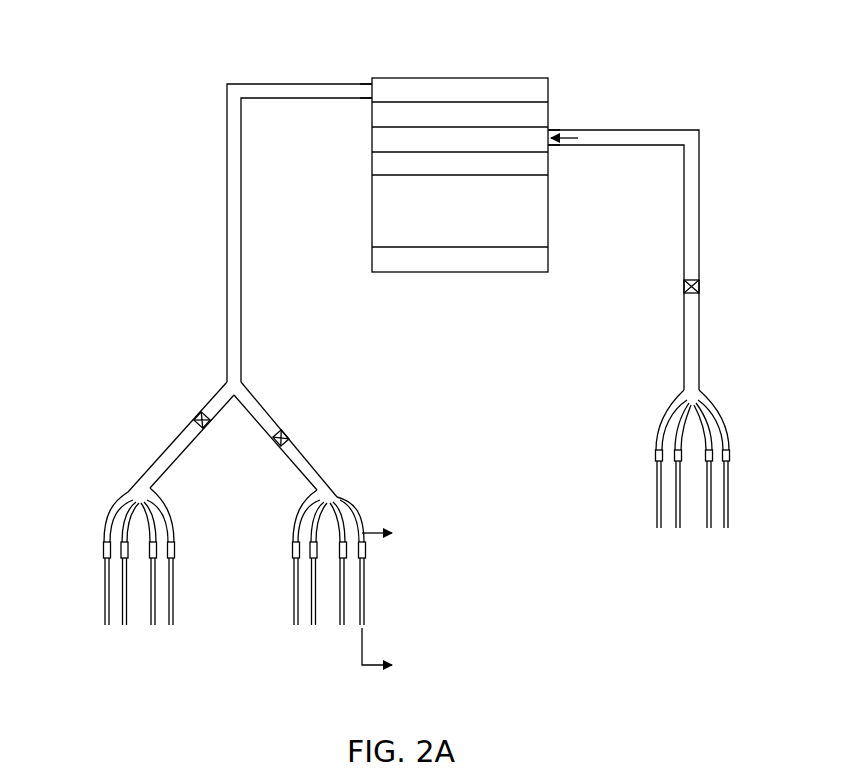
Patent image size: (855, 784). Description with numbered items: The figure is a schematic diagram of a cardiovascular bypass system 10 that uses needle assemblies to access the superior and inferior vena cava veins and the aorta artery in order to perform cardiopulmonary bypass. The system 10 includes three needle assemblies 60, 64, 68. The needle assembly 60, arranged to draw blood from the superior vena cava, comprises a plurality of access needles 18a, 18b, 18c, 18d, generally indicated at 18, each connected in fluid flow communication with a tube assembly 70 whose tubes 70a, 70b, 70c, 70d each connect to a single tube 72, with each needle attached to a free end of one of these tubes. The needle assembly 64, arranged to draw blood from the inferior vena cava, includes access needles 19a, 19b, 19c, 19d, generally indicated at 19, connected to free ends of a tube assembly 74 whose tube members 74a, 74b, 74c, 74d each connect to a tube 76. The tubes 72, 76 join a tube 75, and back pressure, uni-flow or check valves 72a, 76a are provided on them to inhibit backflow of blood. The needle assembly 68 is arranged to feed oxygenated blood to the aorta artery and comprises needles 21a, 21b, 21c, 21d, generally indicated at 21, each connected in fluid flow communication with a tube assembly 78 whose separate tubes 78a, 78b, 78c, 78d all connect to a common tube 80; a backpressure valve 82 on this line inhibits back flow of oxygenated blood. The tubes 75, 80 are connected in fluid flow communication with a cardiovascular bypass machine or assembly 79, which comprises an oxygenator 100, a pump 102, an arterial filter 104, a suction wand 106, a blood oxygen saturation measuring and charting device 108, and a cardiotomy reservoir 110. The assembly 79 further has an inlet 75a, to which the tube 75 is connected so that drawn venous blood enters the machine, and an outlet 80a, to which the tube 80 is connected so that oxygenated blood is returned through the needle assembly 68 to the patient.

The cardiovascular bypass system 10 is at (148, 106).
The cardiovascular bypass machine 79 is at (450, 71).
The oxygenator 100 is at (548, 88).
The pump 102 is at (548, 113).
The arterial filter 104 is at (372, 142).
The suction wand 106 is at (548, 163).
The blood oxygen saturation measuring and charting device 108 is at (548, 205).
The cardiotomy reservoir 110 is at (548, 258).
The tube 75 is at (241, 242).
The inlet 75a is at (368, 75).
The single tube 72 is at (172, 448).
The check valve 72a is at (198, 414).
The tube 76 is at (303, 458).
The check valve 76a is at (290, 437).
The tube assembly 70 is at (183, 523).
The tube 70a is at (168, 520).
The tube 70b is at (178, 541).
The tube 70c is at (120, 544).
The tube 70d is at (106, 527).
The access needles 18 is at (136, 652).
The access needle 18a is at (173, 592).
The access needle 18b is at (155, 608).
The access needle 18c is at (123, 606).
The access needle 18d is at (105, 582).
The needle assembly 60 is at (206, 606).
The tube assembly 74 is at (353, 491).
The tube member 74a is at (357, 510).
The tube member 74b is at (364, 548).
The tube member 74c is at (311, 544).
The tube member 74d is at (295, 526).
The access needles 19 is at (322, 652).
The access needle 19a is at (364, 580).
The access needle 19b is at (364, 610).
The access needle 19c is at (312, 606).
The access needle 19d is at (295, 580).
The needle assembly 64 is at (450, 501).
The common tube 80 is at (699, 226).
The outlet 80a is at (590, 144).
The backpressure valve 82 is at (699, 286).
The tube assembly 78 is at (638, 432).
The tube 78a is at (710, 415).
The tube 78b is at (730, 453).
The tube 78c is at (670, 448).
The tube 78d is at (672, 408).
The needles 21 is at (690, 558).
The needle 21a is at (727, 487).
The needle 21b is at (710, 512).
The needle 21c is at (677, 512).
The needle 21d is at (658, 487).
The needle assembly 68 is at (742, 433).